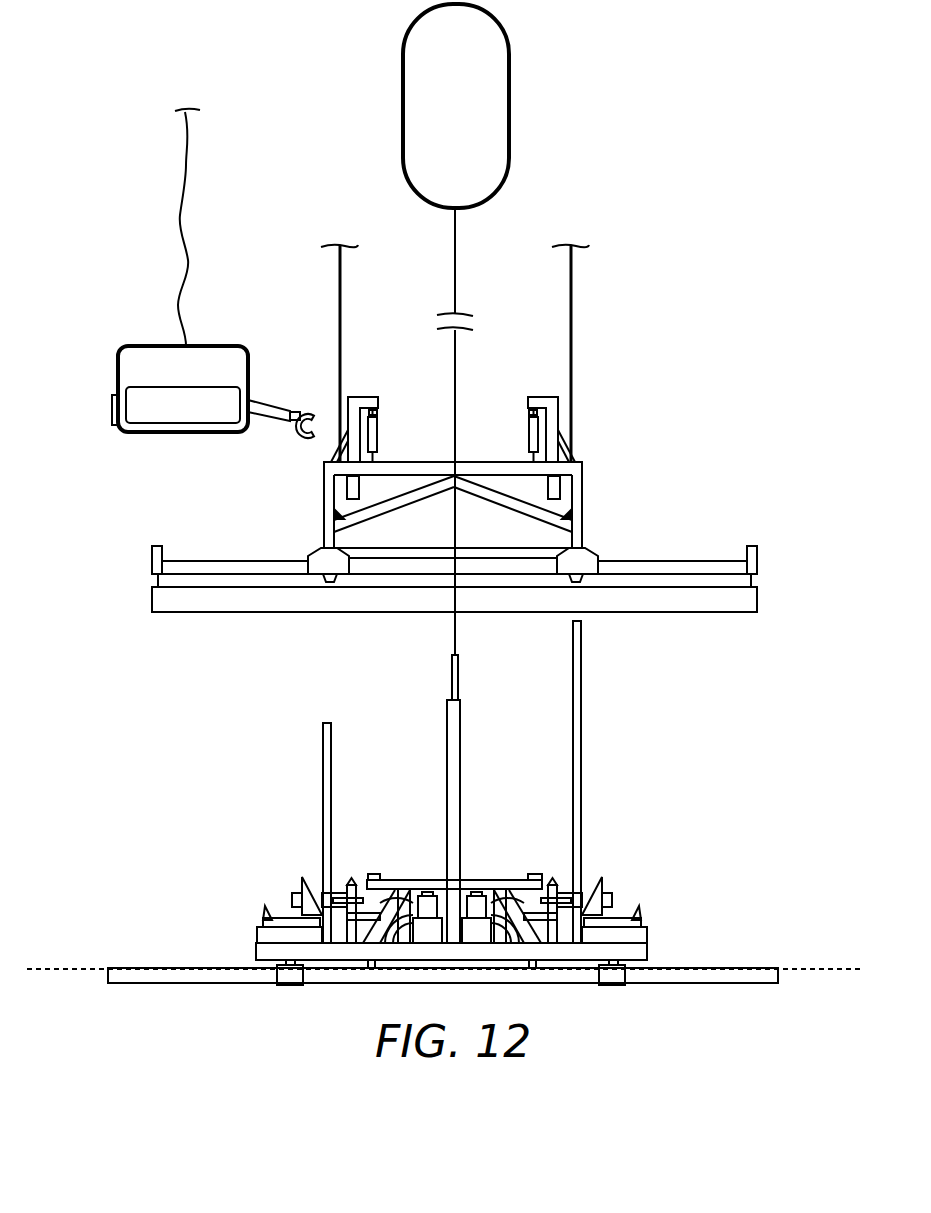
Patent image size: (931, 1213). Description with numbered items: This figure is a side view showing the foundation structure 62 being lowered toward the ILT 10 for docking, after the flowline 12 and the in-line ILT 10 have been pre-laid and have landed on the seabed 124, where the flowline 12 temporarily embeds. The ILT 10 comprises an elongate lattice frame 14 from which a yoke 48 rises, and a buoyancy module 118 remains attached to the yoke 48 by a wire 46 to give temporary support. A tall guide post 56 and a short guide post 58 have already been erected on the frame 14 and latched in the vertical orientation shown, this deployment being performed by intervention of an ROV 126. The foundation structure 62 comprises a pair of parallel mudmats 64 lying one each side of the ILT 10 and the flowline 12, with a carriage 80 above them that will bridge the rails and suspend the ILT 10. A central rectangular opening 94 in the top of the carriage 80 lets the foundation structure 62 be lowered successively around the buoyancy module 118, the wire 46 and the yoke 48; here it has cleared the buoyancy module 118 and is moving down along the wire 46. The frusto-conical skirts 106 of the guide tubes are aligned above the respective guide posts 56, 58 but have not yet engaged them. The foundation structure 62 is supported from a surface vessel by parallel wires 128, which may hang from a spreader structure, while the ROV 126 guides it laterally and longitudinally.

The ILT 10 is at (700, 845).
The subsea flowline 12 is at (729, 968).
The elongate lattice frame 14 is at (509, 863).
The wire 46 is at (458, 271).
The yoke 48 is at (460, 745).
The tall guide post 56 is at (582, 700).
The short guide post 58 is at (331, 789).
The foundation structure 62 is at (703, 636).
The mudmat 64 is at (218, 606).
The carriage 80 is at (582, 462).
The central rectangular opening 94 is at (406, 388).
The frusto-conical skirt 106 is at (312, 513).
The buoyancy module 118 is at (511, 133).
The seabed 124 is at (817, 967).
The ROV 126 is at (132, 344).
The wires 128 is at (338, 305).